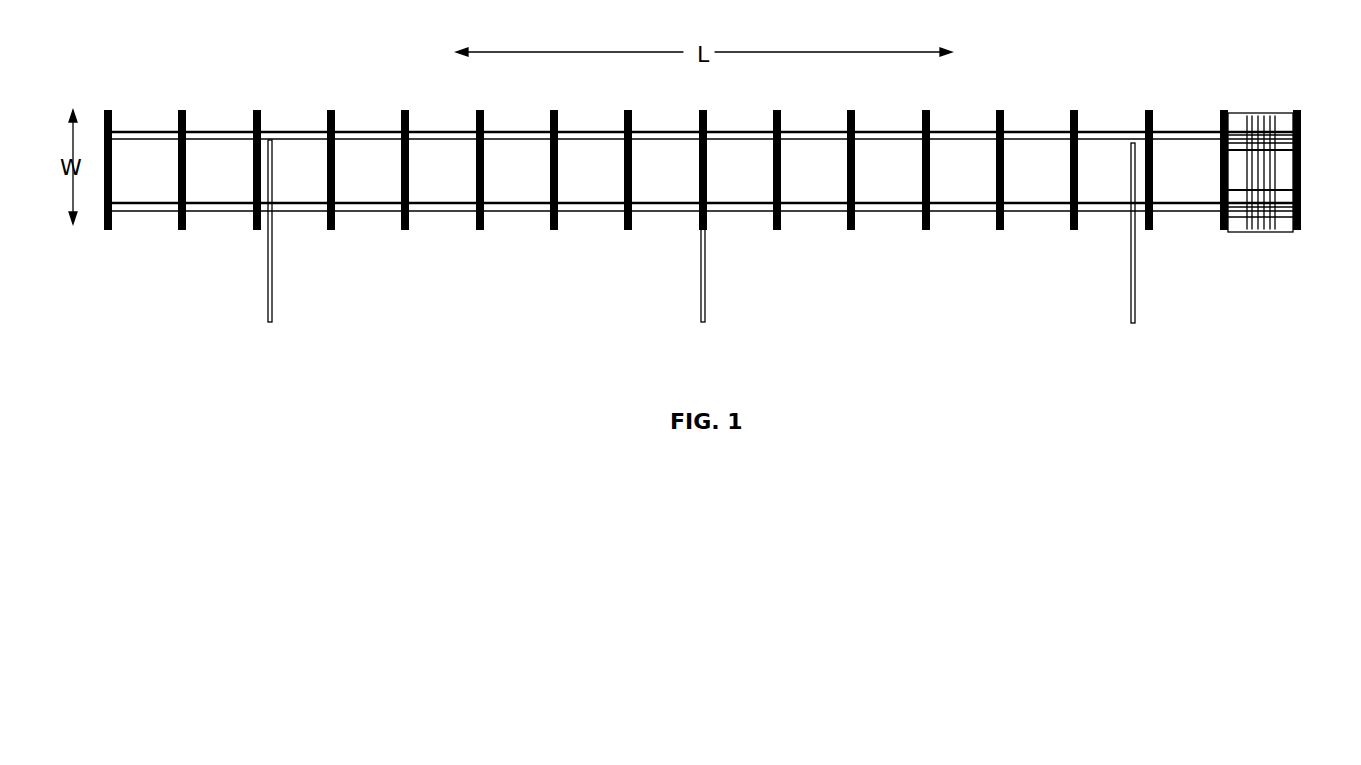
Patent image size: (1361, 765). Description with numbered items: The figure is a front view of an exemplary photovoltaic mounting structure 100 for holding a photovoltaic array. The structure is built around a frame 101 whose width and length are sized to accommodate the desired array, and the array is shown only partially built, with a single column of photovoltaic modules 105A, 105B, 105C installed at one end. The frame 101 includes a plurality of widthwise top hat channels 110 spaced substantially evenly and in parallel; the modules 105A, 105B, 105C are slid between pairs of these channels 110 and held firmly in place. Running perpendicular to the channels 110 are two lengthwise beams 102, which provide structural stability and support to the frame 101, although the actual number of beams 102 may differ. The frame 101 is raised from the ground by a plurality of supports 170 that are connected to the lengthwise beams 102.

The photovoltaic mounting structure 100 is at (352, 32).
The frame 101 is at (159, 226).
The lengthwise beams 102 is at (1035, 134).
The photovoltaic module 105A is at (1247, 226).
The photovoltaic module 105B is at (1290, 170).
The photovoltaic module 105C is at (1262, 120).
The widthwise top hat channels 110 is at (112, 122).
The supports 170 is at (284, 287).